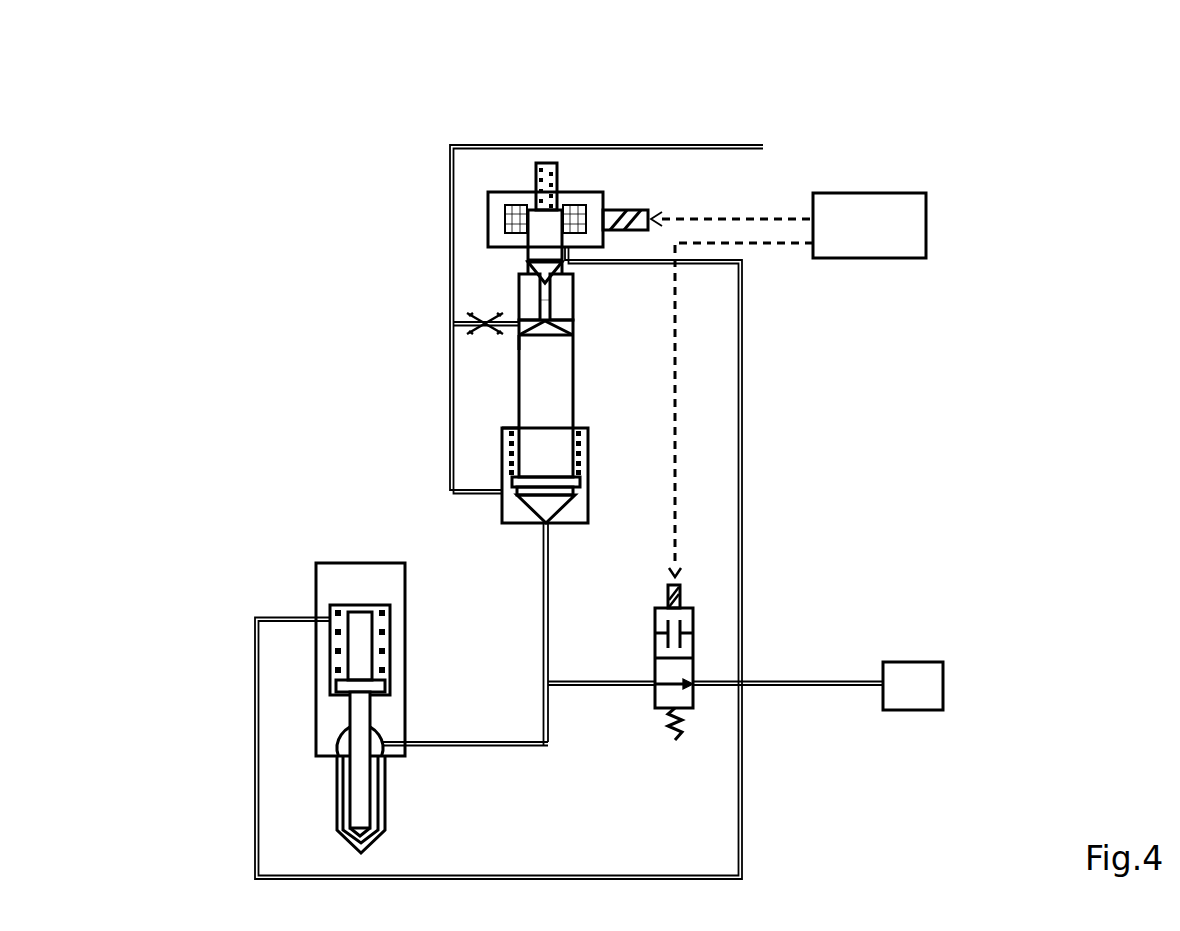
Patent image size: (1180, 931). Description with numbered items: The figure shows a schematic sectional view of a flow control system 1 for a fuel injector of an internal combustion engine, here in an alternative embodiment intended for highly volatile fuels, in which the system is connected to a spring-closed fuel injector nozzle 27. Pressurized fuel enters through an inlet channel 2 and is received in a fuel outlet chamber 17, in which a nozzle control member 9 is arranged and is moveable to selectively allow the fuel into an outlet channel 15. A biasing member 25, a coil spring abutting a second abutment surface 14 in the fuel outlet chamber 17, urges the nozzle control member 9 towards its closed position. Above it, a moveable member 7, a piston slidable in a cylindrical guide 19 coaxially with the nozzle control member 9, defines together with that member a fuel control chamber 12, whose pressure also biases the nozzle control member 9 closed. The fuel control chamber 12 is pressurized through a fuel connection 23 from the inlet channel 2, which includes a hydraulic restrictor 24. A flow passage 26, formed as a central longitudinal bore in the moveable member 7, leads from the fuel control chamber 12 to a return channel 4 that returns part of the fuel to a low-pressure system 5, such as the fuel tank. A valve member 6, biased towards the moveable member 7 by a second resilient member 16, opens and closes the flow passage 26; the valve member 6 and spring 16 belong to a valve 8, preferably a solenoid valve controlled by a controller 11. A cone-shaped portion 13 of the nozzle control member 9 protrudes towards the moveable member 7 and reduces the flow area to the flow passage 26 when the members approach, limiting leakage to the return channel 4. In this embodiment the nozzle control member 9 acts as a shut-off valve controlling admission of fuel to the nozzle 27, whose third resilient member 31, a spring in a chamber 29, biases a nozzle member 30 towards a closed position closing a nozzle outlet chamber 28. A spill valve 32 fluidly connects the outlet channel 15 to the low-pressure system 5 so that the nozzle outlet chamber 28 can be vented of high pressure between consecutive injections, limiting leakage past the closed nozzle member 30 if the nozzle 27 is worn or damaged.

The flow control system 1 is at (315, 145).
The inlet channel 2 is at (616, 317).
The return channel 4 is at (741, 370).
The low-pressure system 5 is at (818, 686).
The valve member 6 is at (545, 243).
The moveable member 7 is at (530, 300).
The valve 8 is at (512, 207).
The nozzle control member 9 is at (523, 405).
The controller 11 is at (794, 385).
The fuel control chamber 12 is at (519, 332).
The portion 13 is at (546, 323).
The second abutment surface 14 is at (587, 430).
The outlet channel 15 is at (540, 615).
The second resilient member 16 is at (552, 186).
The fuel outlet chamber 17 is at (512, 507).
The guide 19 is at (574, 303).
The fuel connection 23 is at (482, 328).
The hydraulic restrictor 24 is at (482, 328).
The biasing member 25 is at (510, 440).
The flow passage 26 is at (548, 307).
The spring-closed fuel injector nozzle 27 is at (345, 567).
The nozzle outlet chamber 28 is at (378, 738).
The chamber 29 is at (336, 657).
The nozzle member 30 is at (362, 720).
The third resilient member 31 is at (382, 612).
The spill valve 32 is at (688, 662).